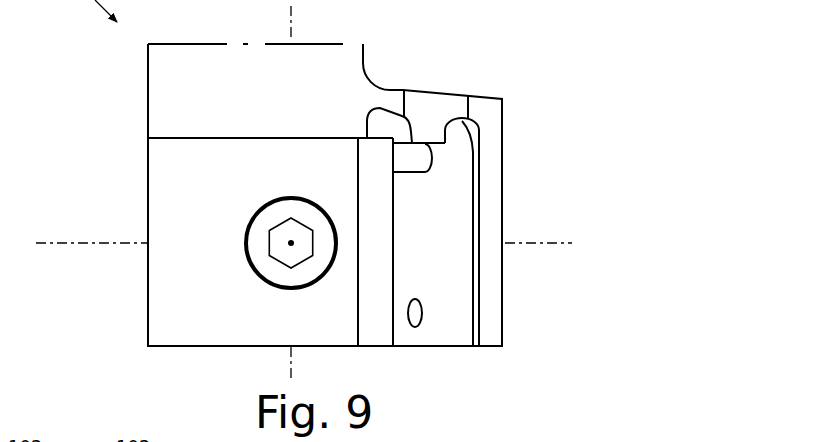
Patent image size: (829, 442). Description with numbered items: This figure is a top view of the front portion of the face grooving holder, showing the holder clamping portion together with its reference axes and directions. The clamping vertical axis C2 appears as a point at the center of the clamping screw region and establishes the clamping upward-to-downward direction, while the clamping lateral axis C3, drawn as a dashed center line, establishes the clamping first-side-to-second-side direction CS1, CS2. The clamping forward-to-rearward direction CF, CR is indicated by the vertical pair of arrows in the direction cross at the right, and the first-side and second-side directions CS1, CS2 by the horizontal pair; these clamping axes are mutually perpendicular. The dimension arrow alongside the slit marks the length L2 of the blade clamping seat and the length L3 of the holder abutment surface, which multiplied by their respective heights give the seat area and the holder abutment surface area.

The clamping vertical axis C2 is at (283, 240).
The clamping lateral axis C3 is at (120, 242).
The length of the blade clamping seat L2 is at (445, 244).
The length of the holder abutment surface L3 is at (462, 346).
The clamping rearward direction CR is at (619, 215).
The clamping forward direction CF is at (619, 240).
The clamping first-side direction CS1 is at (601, 228).
The clamping second-side direction CS2 is at (674, 228).